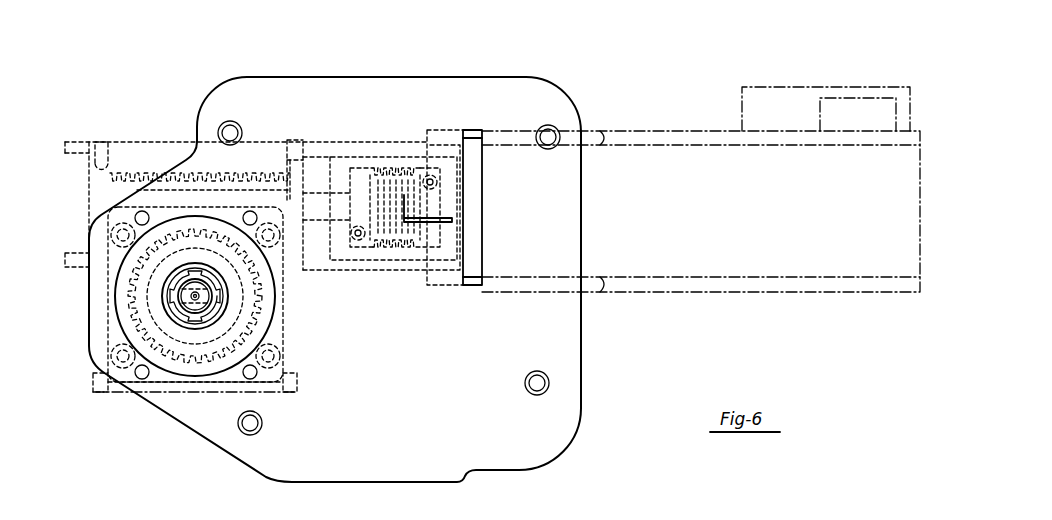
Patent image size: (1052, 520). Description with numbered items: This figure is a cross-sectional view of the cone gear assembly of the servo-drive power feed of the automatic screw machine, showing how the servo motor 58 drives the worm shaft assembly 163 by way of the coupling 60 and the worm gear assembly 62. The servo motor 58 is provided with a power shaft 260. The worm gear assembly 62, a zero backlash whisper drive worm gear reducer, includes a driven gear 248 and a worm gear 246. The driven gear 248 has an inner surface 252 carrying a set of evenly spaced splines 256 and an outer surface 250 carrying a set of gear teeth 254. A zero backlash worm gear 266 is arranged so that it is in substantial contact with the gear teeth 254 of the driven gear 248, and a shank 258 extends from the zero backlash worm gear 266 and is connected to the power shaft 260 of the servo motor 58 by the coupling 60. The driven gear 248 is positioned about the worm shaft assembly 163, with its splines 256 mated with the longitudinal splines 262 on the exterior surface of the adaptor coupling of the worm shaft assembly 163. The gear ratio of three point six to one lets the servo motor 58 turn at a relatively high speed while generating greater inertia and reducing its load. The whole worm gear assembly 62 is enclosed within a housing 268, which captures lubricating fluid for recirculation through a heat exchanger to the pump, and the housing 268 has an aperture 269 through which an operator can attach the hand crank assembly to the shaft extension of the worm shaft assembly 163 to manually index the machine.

The coupling 60 is at (396, 100).
The worm gear assembly 62 is at (184, 100).
The servo motor 58 is at (657, 177).
The worm gear 246 is at (90, 183).
The zero backlash worm gear 266 is at (157, 200).
The shank 258 is at (340, 208).
The power shaft 260 is at (448, 203).
The outer surface 250 is at (105, 323).
The gear teeth 254 is at (262, 291).
The splines 256 is at (240, 297).
The longitudinal splines 262 is at (240, 315).
The aperture 269 is at (248, 398).
The worm shaft assembly 163 is at (158, 331).
The inner surface 252 is at (186, 347).
The driven gear 248 is at (213, 370).
The housing 268 is at (237, 343).